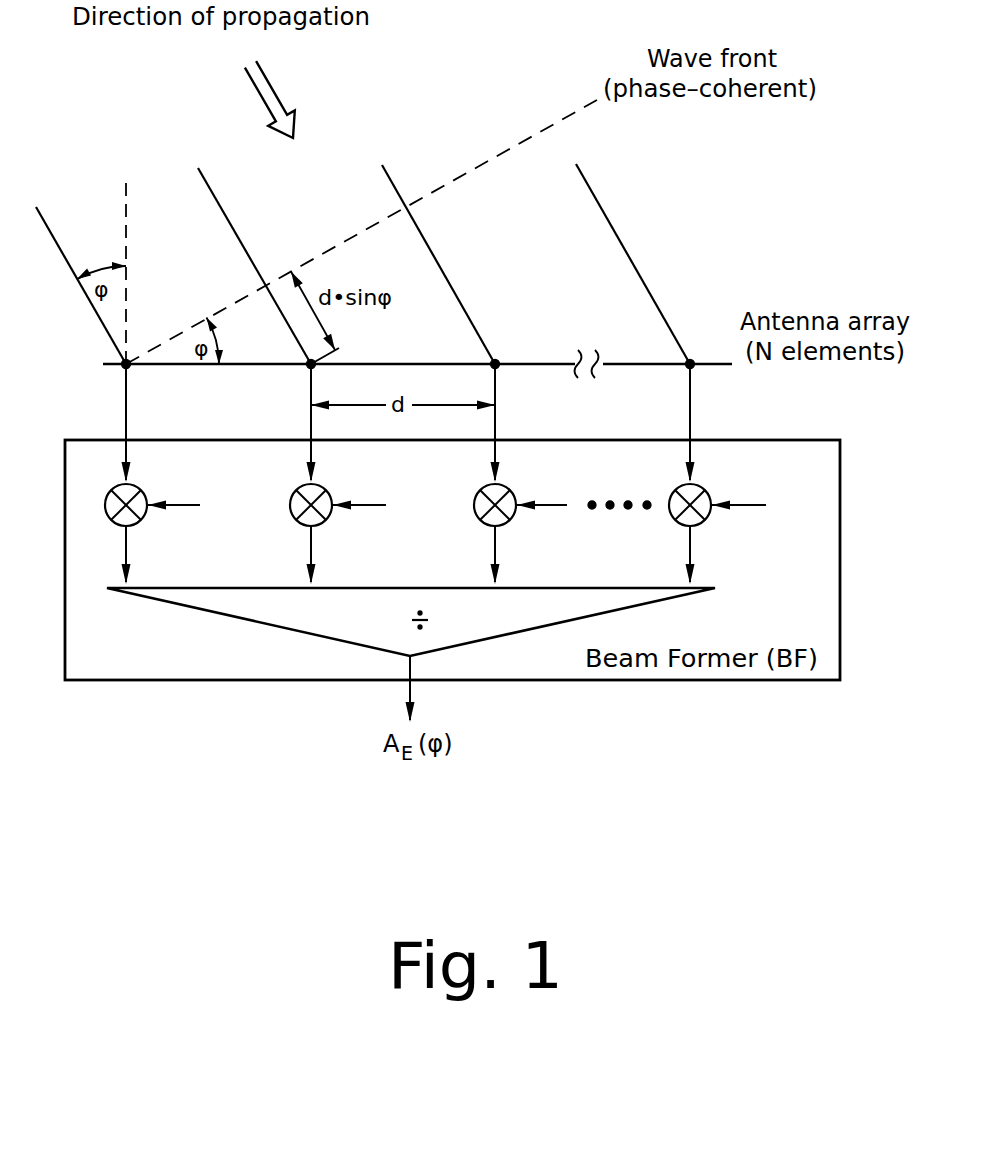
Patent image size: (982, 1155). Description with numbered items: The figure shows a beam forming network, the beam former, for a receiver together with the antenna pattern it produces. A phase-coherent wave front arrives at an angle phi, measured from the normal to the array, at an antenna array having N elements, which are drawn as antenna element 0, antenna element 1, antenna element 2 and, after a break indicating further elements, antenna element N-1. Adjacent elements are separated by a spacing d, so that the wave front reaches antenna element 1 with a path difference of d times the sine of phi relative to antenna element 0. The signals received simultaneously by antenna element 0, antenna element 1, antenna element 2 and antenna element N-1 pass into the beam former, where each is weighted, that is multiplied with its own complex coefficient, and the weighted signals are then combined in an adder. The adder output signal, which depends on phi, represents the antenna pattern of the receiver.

The antenna element 0 is at (135, 395).
The antenna element 1 is at (309, 376).
The antenna element 2 is at (474, 374).
The antenna element N-1 is at (703, 374).